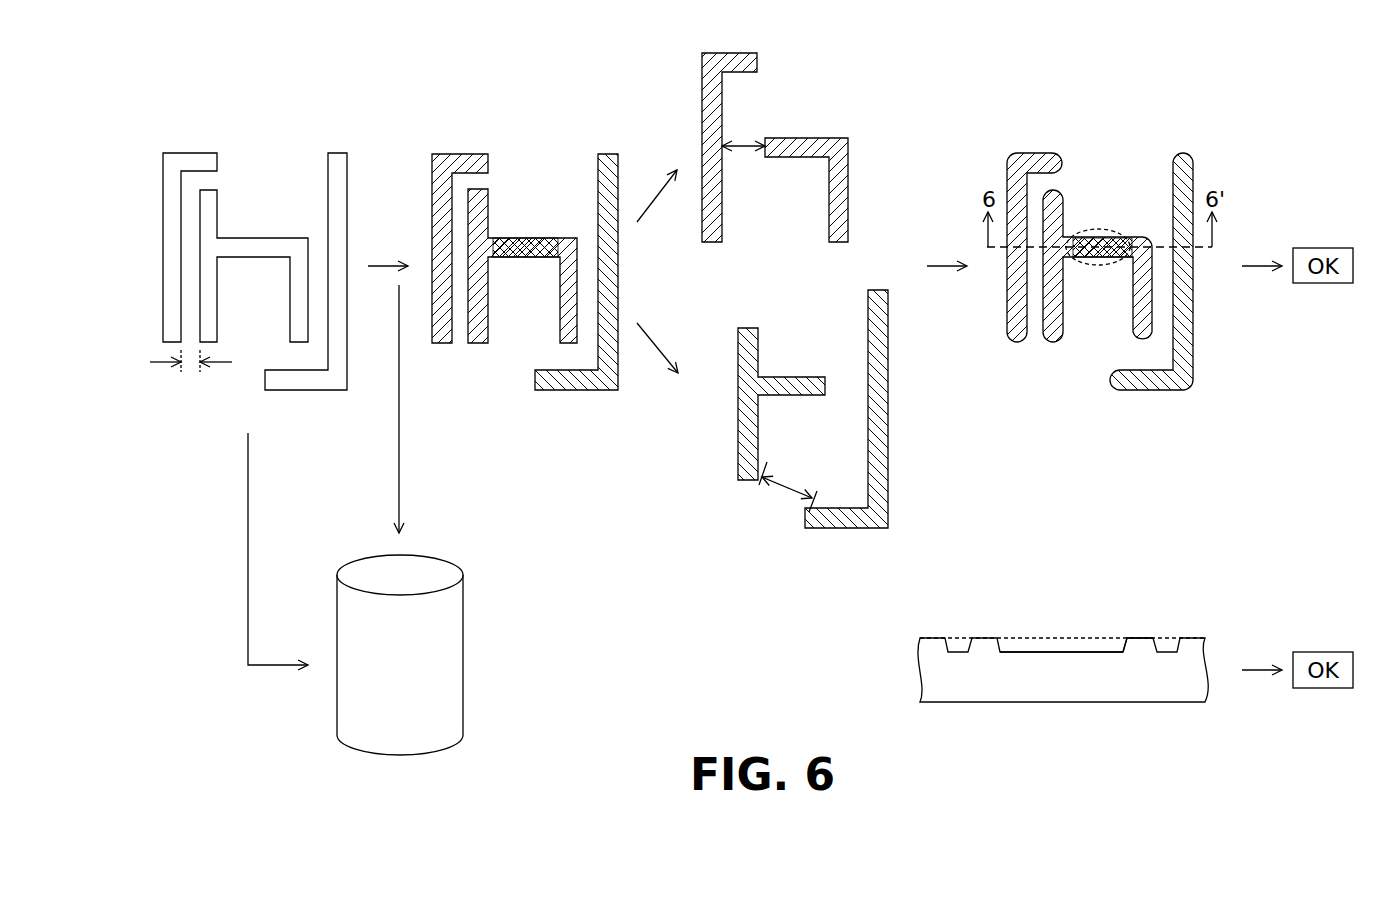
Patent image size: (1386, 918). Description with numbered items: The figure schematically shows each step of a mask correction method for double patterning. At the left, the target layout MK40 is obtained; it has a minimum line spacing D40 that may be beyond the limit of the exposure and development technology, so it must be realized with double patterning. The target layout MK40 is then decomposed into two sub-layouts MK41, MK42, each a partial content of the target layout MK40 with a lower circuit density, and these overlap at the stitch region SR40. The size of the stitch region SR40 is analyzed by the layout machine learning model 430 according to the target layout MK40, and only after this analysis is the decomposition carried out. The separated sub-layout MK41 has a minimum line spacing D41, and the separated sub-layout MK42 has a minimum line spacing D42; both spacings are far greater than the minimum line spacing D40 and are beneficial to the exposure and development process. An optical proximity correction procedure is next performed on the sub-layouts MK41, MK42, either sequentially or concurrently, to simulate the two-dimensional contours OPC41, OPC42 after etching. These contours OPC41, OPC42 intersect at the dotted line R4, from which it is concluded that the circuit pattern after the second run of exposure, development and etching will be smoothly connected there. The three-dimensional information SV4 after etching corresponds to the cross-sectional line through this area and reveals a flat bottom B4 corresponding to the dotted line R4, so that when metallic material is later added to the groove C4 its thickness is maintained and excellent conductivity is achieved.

The target layout MK40 is at (208, 153).
The minimum line spacing D40 is at (191, 373).
The sub-layout MK41 is at (560, 237).
The sub-layout MK42 is at (535, 380).
The stitch region SR40 is at (527, 257).
The minimum line spacing D41 is at (744, 164).
The minimum line spacing D42 is at (793, 482).
The two-dimensional contour OPC41 is at (1132, 237).
The two-dimensional contour OPC42 is at (1110, 377).
The dotted line R4 is at (1098, 265).
The three-dimensional information SV4 is at (930, 647).
The groove C4 is at (1030, 645).
The flat bottom B4 is at (1080, 650).
The layout machine learning model 430 is at (383, 740).